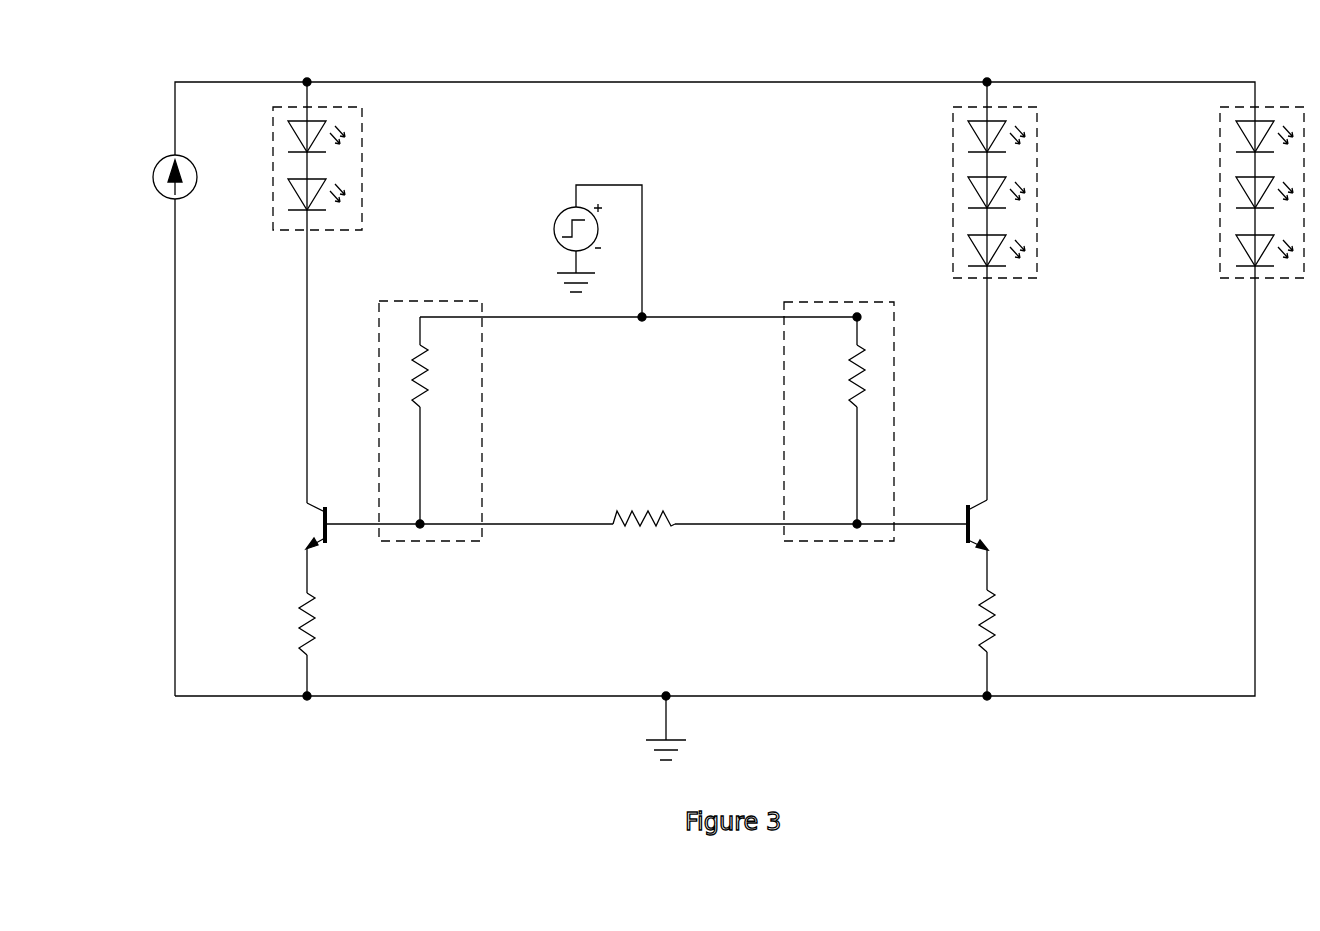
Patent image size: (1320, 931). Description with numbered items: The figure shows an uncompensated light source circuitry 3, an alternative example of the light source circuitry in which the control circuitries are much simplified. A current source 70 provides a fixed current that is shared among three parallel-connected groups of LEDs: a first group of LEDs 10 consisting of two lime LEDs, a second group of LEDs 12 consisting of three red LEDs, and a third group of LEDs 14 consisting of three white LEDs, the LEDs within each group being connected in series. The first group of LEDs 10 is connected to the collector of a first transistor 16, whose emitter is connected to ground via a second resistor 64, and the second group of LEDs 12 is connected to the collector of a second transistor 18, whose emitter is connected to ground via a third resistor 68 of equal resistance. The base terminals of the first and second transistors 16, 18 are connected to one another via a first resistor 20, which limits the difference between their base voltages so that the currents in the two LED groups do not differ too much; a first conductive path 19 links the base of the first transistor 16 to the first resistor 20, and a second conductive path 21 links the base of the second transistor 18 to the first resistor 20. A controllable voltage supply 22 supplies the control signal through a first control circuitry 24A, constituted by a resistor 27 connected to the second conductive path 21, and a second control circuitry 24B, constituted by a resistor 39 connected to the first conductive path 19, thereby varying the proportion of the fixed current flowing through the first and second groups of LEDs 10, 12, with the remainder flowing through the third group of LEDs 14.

The uncompensated light source circuitry 3 is at (124, 113).
The current source 70 is at (162, 198).
The first group of LEDs 10 is at (342, 230).
The second group of LEDs 12 is at (953, 149).
The third group of LEDs 14 is at (1220, 172).
The controllable voltage supply 22 is at (555, 221).
The second control circuitry 24B is at (442, 541).
The first control circuitry 24A is at (806, 541).
The resistor 39 is at (430, 407).
The resistor 27 is at (852, 407).
The first conductive path 19 is at (535, 525).
The first resistor 20 is at (612, 517).
The second conductive path 21 is at (727, 525).
The first transistor 16 is at (328, 539).
The second transistor 18 is at (966, 524).
The second resistor 64 is at (312, 654).
The third resistor 68 is at (991, 652).